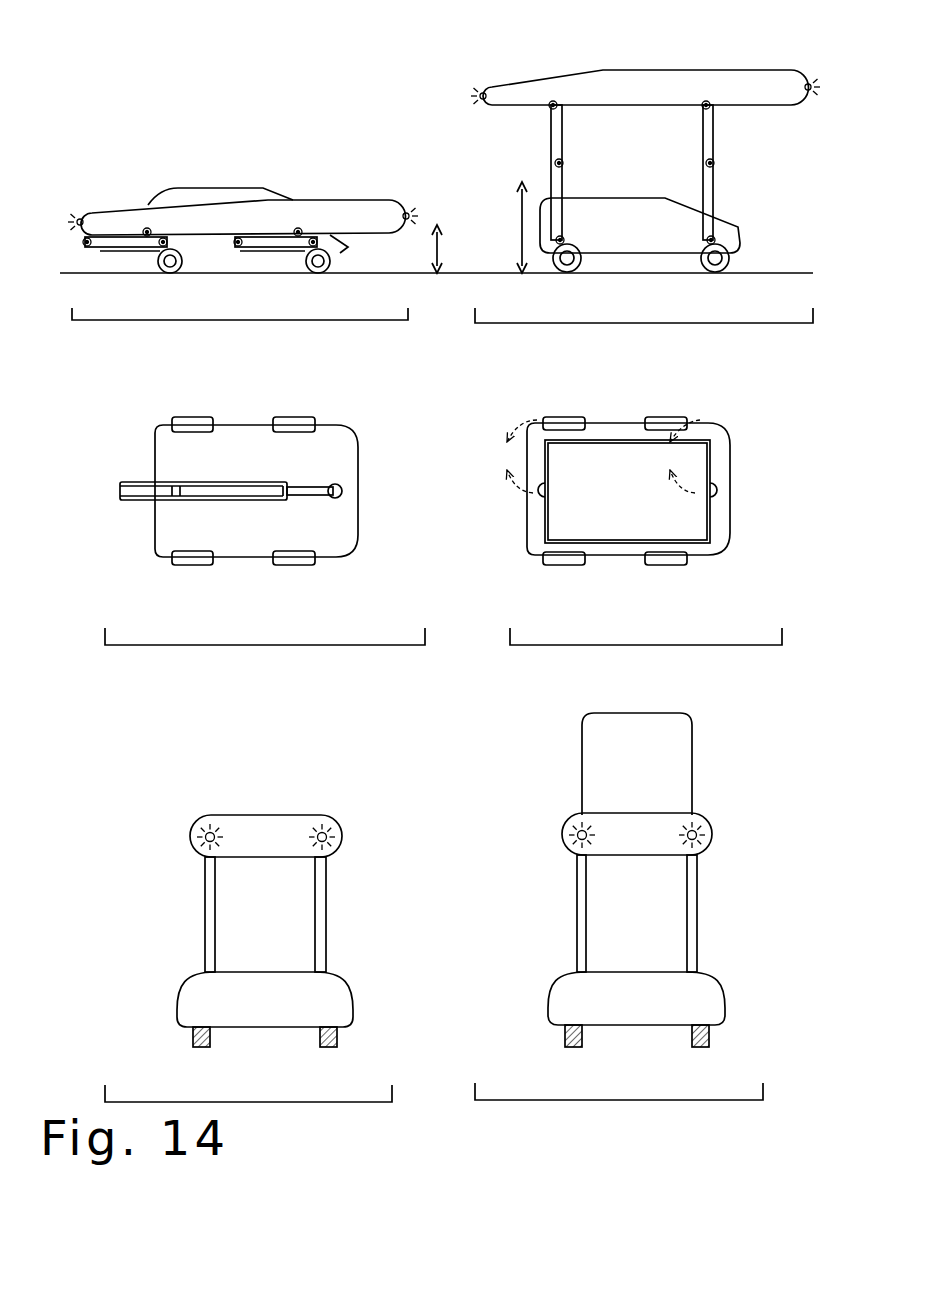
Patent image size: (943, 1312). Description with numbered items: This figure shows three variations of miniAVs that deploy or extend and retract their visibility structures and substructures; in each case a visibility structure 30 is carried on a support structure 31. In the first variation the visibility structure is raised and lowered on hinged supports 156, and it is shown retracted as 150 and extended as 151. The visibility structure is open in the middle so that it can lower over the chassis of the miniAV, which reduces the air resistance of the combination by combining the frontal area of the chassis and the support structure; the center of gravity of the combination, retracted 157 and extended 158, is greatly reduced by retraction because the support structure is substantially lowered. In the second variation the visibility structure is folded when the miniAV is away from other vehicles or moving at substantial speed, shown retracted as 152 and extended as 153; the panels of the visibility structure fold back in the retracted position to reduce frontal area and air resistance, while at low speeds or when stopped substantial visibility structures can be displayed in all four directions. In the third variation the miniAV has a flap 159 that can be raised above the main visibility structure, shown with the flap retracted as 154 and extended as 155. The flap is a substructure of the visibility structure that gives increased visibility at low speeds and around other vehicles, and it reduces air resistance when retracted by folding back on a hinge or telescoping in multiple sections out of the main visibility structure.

The visibility structure 30 is at (342, 198).
The support structure 31 is at (280, 252).
The retracted position of first variation 150 is at (348, 322).
The extended position of first variation 151 is at (535, 324).
The retracted position of second variation 152 is at (362, 646).
The extended position of second variation 153 is at (575, 646).
The retracted position of third variation 154 is at (332, 1103).
The extended position of third variation 155 is at (535, 1101).
The hinged supports 156 is at (102, 247).
The center of gravity when retracted 157 is at (438, 248).
The center of gravity when extended 158 is at (520, 213).
The flap 159 is at (580, 772).